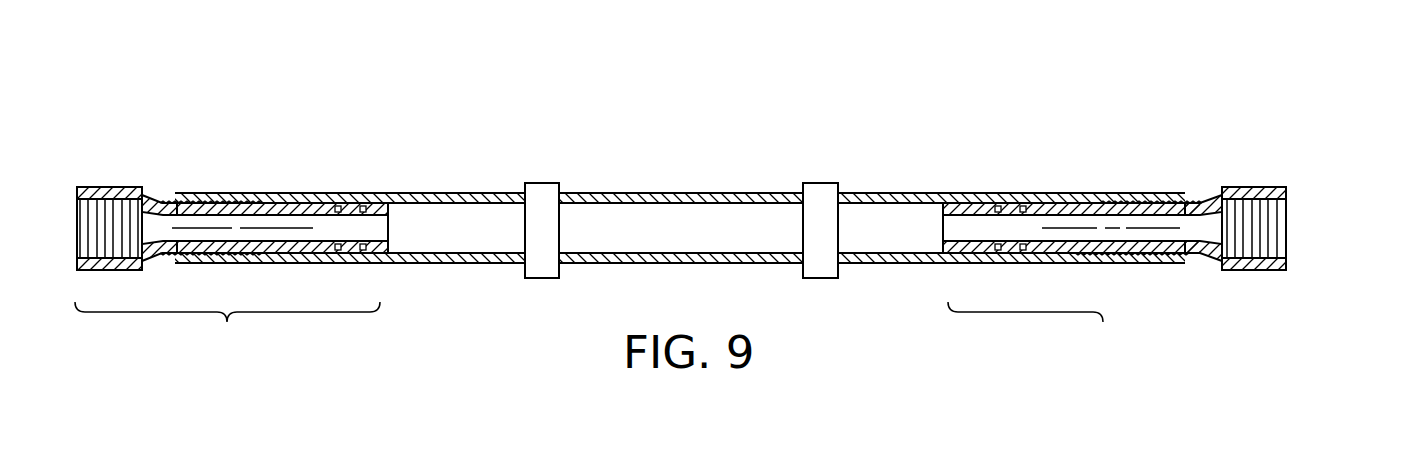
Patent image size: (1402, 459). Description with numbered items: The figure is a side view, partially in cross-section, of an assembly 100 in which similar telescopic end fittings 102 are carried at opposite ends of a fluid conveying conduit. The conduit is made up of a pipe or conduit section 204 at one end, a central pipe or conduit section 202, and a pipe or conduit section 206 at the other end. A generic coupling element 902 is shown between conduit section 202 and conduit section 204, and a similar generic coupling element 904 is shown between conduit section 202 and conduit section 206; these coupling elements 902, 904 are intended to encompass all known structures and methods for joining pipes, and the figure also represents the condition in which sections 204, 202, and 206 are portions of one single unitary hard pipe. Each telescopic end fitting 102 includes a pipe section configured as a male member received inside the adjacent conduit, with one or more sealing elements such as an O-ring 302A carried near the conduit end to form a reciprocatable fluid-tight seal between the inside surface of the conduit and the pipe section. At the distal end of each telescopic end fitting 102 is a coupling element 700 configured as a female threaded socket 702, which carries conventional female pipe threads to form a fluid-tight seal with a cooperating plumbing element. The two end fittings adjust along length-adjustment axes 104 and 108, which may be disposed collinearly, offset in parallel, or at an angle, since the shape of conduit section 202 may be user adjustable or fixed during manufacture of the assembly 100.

The embodiment 100 is at (727, 196).
The telescopic end fitting 102 is at (602, 332).
The length-adjustment axis 104 is at (203, 227).
The length-adjustment axis 108 is at (1128, 227).
The pipe or conduit section 202 is at (652, 192).
The pipe or conduit section 204 is at (480, 192).
The pipe or conduit section 206 is at (930, 193).
The O-ring 302A is at (367, 203).
The coupling element 700 is at (728, 163).
The female threaded socket 702 is at (1268, 225).
The generic coupling element 902 is at (537, 193).
The generic coupling element 904 is at (820, 190).